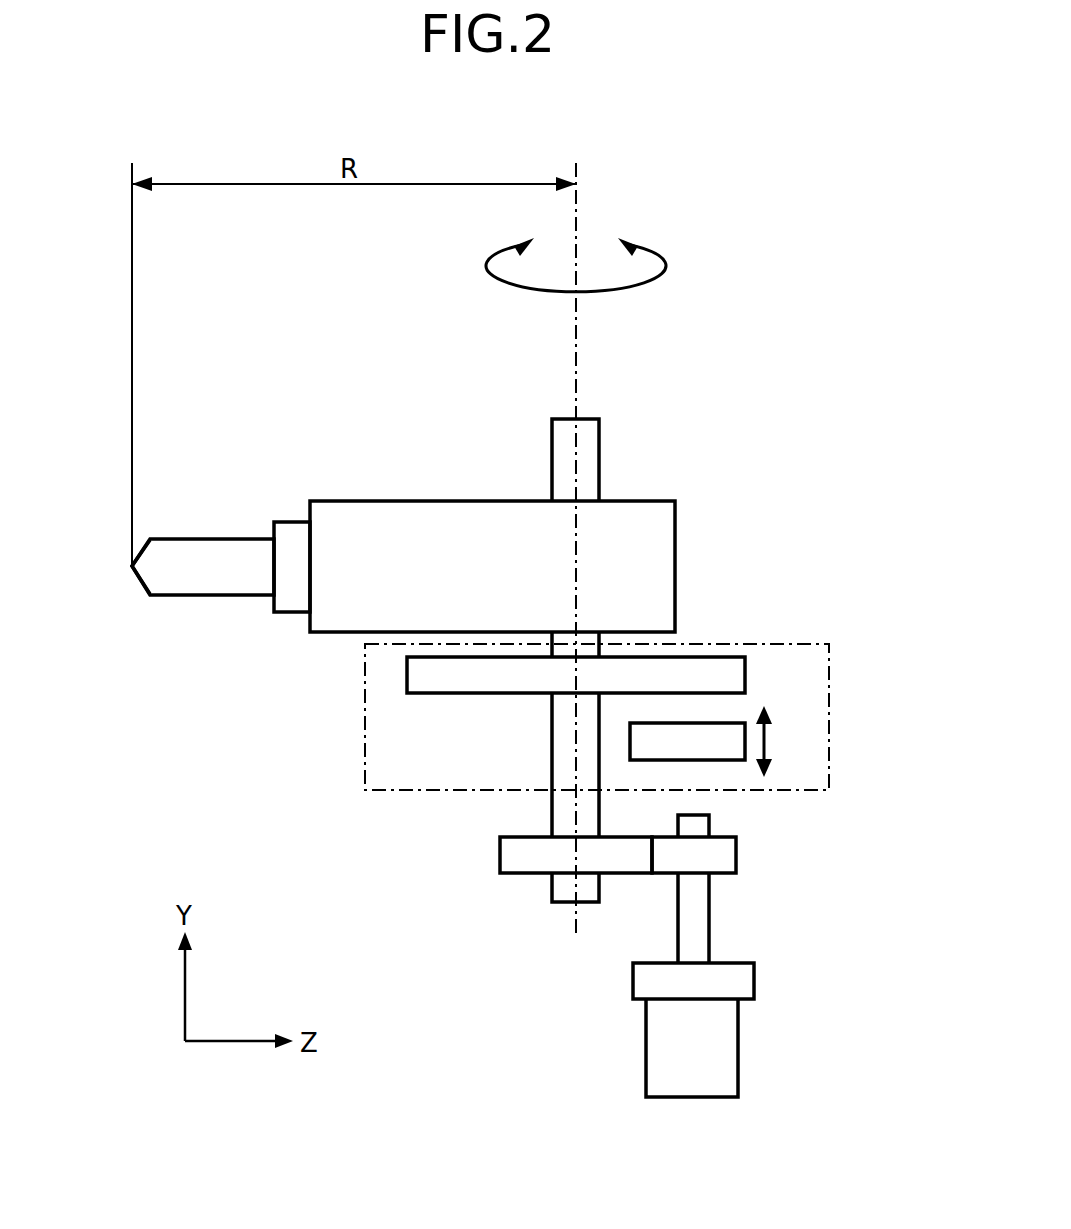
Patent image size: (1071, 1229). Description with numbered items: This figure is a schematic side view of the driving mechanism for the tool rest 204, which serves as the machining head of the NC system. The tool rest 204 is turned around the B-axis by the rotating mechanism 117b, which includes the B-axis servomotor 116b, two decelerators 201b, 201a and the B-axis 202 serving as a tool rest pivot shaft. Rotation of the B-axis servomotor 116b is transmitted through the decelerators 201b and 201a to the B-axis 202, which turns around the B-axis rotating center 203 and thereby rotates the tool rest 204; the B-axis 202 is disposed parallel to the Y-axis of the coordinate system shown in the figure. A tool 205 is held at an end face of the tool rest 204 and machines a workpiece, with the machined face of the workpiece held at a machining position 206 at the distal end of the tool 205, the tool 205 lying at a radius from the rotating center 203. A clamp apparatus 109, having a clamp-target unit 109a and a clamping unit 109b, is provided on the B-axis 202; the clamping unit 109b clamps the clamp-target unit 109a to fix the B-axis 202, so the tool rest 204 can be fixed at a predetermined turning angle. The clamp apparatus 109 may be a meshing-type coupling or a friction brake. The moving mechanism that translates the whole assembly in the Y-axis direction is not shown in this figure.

The clamp apparatus 109 is at (829, 706).
The clamp-target unit 109a is at (712, 661).
The clamping unit 109b is at (705, 753).
The B-axis servomotor 116b is at (738, 1043).
The rotating mechanism 117b is at (772, 915).
The decelerator 201a is at (500, 851).
The decelerator 201b is at (737, 855).
The B-axis 202 is at (600, 457).
The B-axis rotating center 203 is at (577, 211).
The tool rest 204 is at (368, 512).
The tool 205 is at (172, 547).
The machining position 206 is at (132, 565).